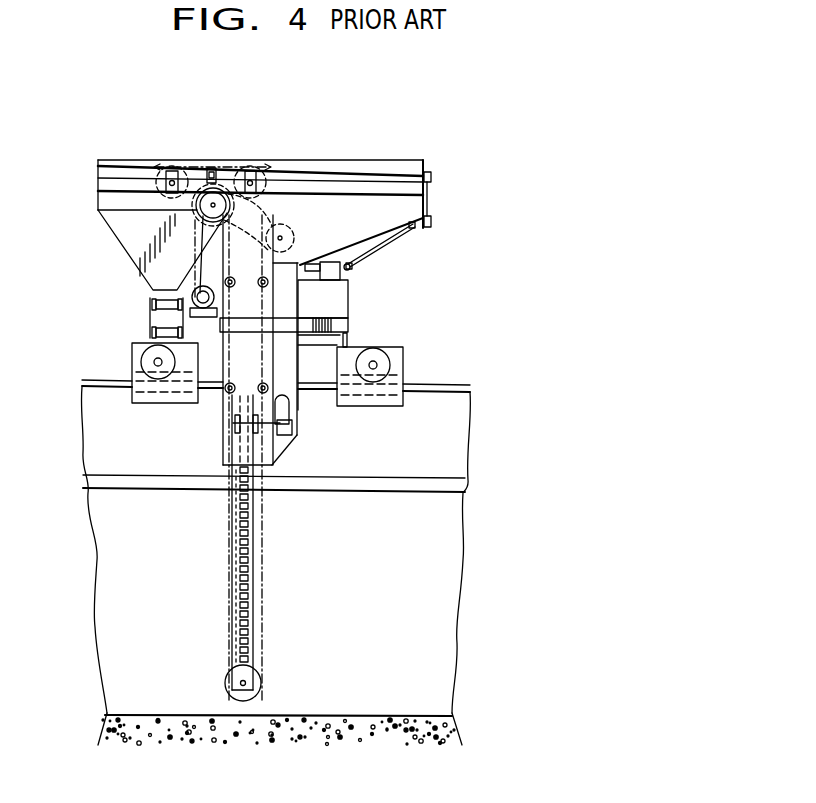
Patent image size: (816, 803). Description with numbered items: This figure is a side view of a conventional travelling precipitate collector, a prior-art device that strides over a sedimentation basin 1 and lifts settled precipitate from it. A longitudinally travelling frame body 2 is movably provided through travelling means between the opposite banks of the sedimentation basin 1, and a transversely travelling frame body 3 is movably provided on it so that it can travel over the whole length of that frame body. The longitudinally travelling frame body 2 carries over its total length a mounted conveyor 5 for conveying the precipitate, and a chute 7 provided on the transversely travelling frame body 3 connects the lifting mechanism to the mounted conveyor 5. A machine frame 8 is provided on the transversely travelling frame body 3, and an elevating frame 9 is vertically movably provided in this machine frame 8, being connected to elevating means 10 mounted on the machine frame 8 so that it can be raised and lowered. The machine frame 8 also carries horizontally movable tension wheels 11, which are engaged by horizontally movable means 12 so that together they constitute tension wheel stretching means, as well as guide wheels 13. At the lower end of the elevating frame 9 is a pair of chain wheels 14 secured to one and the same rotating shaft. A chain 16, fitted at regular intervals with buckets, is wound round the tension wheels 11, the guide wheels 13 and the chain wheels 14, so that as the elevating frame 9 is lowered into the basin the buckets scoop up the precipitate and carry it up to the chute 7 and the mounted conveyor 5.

The sedimentation basin 1 is at (350, 716).
The longitudinally travelling frame body 2 is at (210, 368).
The transversely travelling frame body 3 is at (347, 328).
The mounted conveyor 5 is at (148, 312).
The chute 7 is at (110, 228).
The machine frame 8 is at (330, 207).
The elevating frame 9 is at (232, 583).
The elevating means 10 is at (287, 425).
The tension wheels 11 is at (256, 165).
The horizontally movable means 12 is at (387, 249).
The guide wheels 13 is at (229, 214).
The chain wheels 14 is at (255, 690).
The chain 16 is at (225, 655).